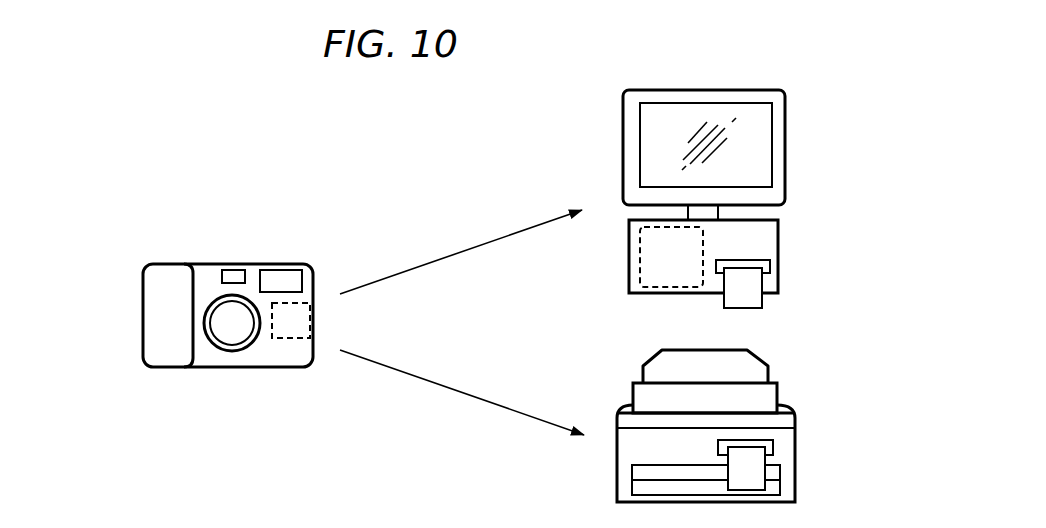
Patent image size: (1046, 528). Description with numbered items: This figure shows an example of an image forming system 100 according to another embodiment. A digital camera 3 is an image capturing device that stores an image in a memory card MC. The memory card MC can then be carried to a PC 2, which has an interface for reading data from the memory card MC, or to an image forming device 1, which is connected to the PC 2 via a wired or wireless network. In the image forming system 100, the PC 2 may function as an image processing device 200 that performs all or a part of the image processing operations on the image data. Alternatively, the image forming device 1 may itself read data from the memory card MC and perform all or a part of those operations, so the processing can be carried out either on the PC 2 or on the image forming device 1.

The image forming system 100 is at (262, 146).
The digital camera 3 is at (247, 264).
The PC 2 is at (696, 191).
The image processing device 200 is at (650, 263).
The image forming device 1 is at (787, 409).
The memory card MC is at (285, 338).